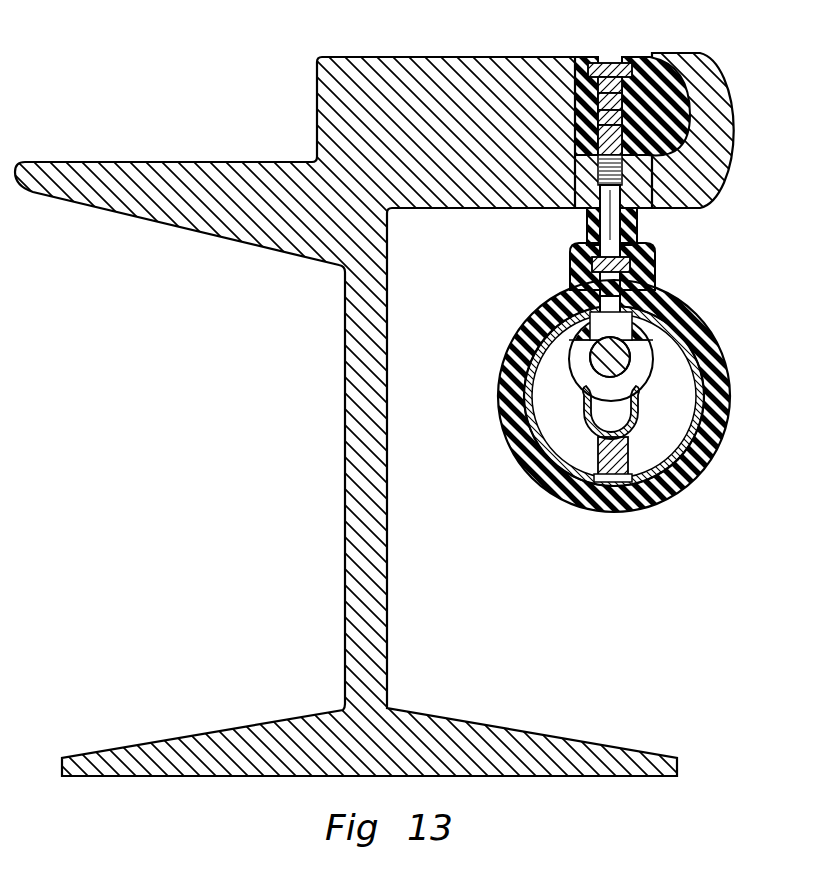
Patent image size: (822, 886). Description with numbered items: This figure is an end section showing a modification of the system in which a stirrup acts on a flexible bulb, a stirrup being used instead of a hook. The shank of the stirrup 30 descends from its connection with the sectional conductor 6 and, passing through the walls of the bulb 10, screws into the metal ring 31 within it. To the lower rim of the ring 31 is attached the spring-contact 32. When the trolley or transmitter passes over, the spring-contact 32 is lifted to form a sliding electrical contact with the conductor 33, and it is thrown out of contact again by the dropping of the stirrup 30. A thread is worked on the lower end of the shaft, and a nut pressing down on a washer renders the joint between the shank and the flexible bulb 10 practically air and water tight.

The sectional conductor 6 is at (605, 63).
The bulb 10 is at (614, 396).
The stirrup 30 is at (647, 229).
The metal ring 31 is at (693, 422).
The spring-contact 32 is at (593, 415).
The conductor 33 is at (621, 366).